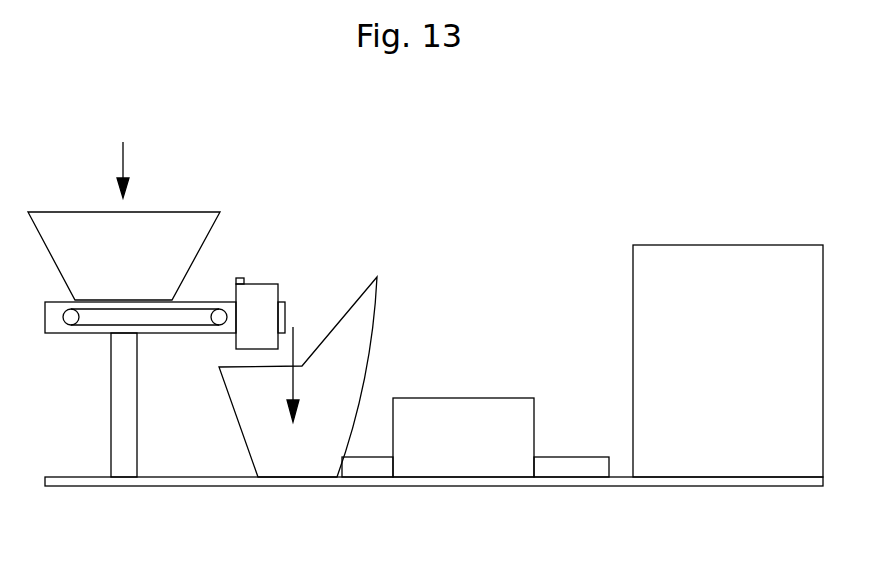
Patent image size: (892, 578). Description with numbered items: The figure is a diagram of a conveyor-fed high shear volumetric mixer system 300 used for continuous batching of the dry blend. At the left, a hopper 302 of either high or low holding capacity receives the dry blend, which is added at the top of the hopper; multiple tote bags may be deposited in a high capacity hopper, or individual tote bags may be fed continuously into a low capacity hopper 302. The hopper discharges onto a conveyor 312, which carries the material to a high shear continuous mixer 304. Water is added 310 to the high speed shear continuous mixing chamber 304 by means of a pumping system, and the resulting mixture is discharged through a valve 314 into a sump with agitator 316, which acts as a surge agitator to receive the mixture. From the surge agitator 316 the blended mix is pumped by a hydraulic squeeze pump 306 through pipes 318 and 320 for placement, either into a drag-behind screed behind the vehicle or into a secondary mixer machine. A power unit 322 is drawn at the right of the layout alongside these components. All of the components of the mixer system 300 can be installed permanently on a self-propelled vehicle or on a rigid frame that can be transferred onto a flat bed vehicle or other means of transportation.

The high shear volumetric mixer system 300 is at (503, 208).
The hopper 302 is at (183, 206).
The high shear continuous mixer 304 is at (267, 283).
The hydraulic squeeze pump 306 is at (449, 443).
The water addition 310 is at (240, 278).
The conveyor 312 is at (97, 323).
The valve 314 is at (285, 308).
The sump with agitator 316 is at (362, 337).
The pipe 318 is at (363, 467).
The pipe 320 is at (569, 467).
The power unit 322 is at (714, 413).